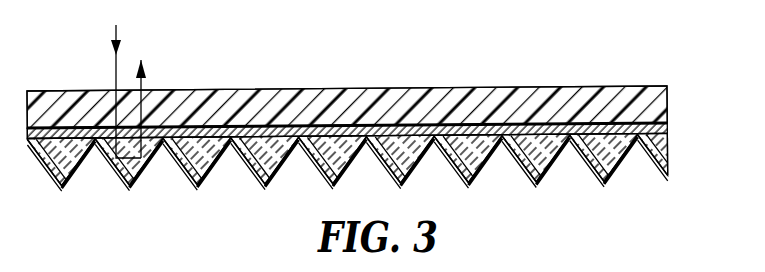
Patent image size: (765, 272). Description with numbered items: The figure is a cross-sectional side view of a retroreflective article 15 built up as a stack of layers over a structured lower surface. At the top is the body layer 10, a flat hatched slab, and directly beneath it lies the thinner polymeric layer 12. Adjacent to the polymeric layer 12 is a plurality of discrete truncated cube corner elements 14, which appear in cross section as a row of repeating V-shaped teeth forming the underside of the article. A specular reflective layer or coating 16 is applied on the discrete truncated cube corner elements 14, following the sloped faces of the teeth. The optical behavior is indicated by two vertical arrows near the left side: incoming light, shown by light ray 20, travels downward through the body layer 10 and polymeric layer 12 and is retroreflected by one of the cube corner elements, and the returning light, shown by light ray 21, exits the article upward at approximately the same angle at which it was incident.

The body layer 10 is at (667, 98).
The polymeric layer 12 is at (667, 123).
The discrete truncated cube corner elements 14 is at (667, 147).
The specular reflective layer or coating 16 is at (667, 172).
The light ray 20 is at (115, 70).
The light ray 21 is at (142, 83).
The retroreflective article 15 is at (584, 56).